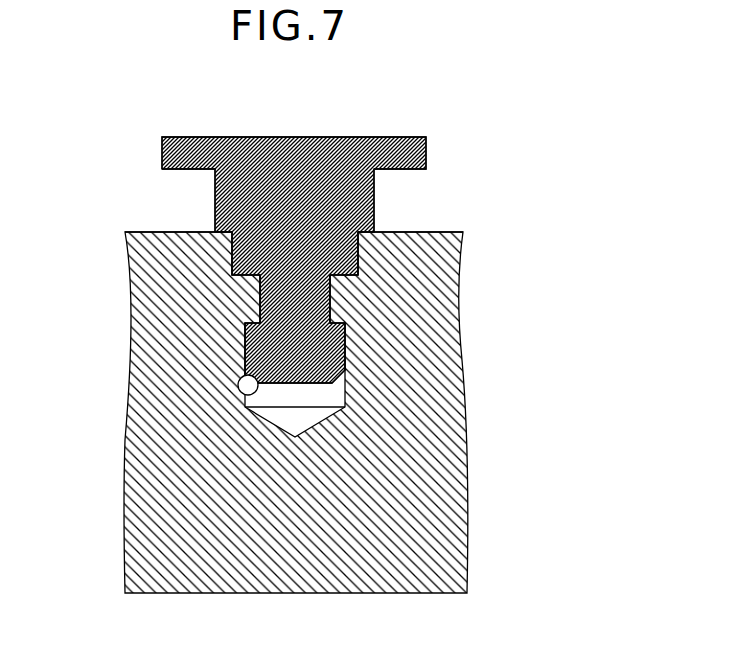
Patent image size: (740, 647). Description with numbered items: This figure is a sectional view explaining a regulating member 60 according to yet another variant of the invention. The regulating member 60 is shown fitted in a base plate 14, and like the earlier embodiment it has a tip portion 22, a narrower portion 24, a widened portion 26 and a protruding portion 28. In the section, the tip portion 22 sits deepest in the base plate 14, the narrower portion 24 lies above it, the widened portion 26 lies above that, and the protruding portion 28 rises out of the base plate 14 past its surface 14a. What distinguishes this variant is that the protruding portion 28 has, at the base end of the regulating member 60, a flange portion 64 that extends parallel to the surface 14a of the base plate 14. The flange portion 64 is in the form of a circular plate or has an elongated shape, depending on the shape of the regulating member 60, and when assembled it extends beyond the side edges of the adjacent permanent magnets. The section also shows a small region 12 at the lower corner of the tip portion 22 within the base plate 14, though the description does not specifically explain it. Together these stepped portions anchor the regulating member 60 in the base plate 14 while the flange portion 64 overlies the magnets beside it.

The gap 12 is at (240, 378).
The base plate 14 is at (458, 501).
The surface of the base plate 14a is at (166, 232).
The tip portion 22 is at (345, 335).
The narrower portion 24 is at (332, 288).
The widened portion 26 is at (358, 250).
The protruding portion 28 is at (374, 199).
The regulating member 60 is at (317, 233).
The flange portion 64 is at (405, 137).